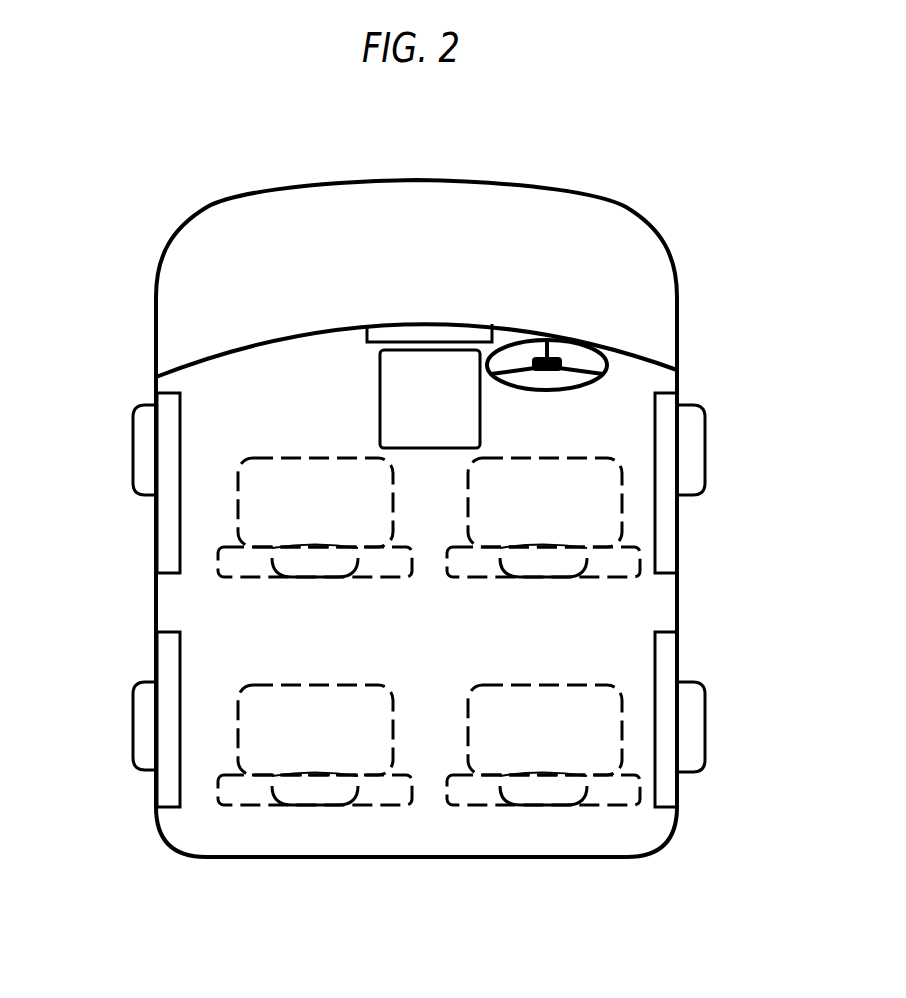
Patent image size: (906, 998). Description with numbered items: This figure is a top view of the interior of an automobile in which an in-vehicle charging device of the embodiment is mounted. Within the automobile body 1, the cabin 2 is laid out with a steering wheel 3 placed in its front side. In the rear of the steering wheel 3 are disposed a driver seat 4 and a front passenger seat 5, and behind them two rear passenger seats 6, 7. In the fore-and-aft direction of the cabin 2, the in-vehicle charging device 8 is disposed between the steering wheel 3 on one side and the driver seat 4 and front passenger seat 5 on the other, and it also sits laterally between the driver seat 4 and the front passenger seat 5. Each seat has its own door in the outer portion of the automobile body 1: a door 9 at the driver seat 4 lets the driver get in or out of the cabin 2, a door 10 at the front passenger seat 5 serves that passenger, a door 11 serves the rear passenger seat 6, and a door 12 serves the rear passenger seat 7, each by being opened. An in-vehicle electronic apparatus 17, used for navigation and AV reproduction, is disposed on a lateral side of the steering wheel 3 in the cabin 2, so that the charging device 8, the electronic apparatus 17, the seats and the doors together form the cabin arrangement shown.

The automobile body 1 is at (657, 257).
The cabin 2 is at (643, 318).
The steering wheel 3 is at (606, 358).
The driver seat 4 is at (642, 568).
The front passenger seat 5 is at (214, 565).
The rear passenger seat 6 is at (642, 792).
The rear passenger seat 7 is at (217, 797).
The in-vehicle charging device 8 is at (450, 350).
The door 9 is at (665, 510).
The door 10 is at (155, 530).
The door 11 is at (665, 657).
The door 12 is at (167, 705).
The in-vehicle electronic apparatus 17 is at (421, 325).